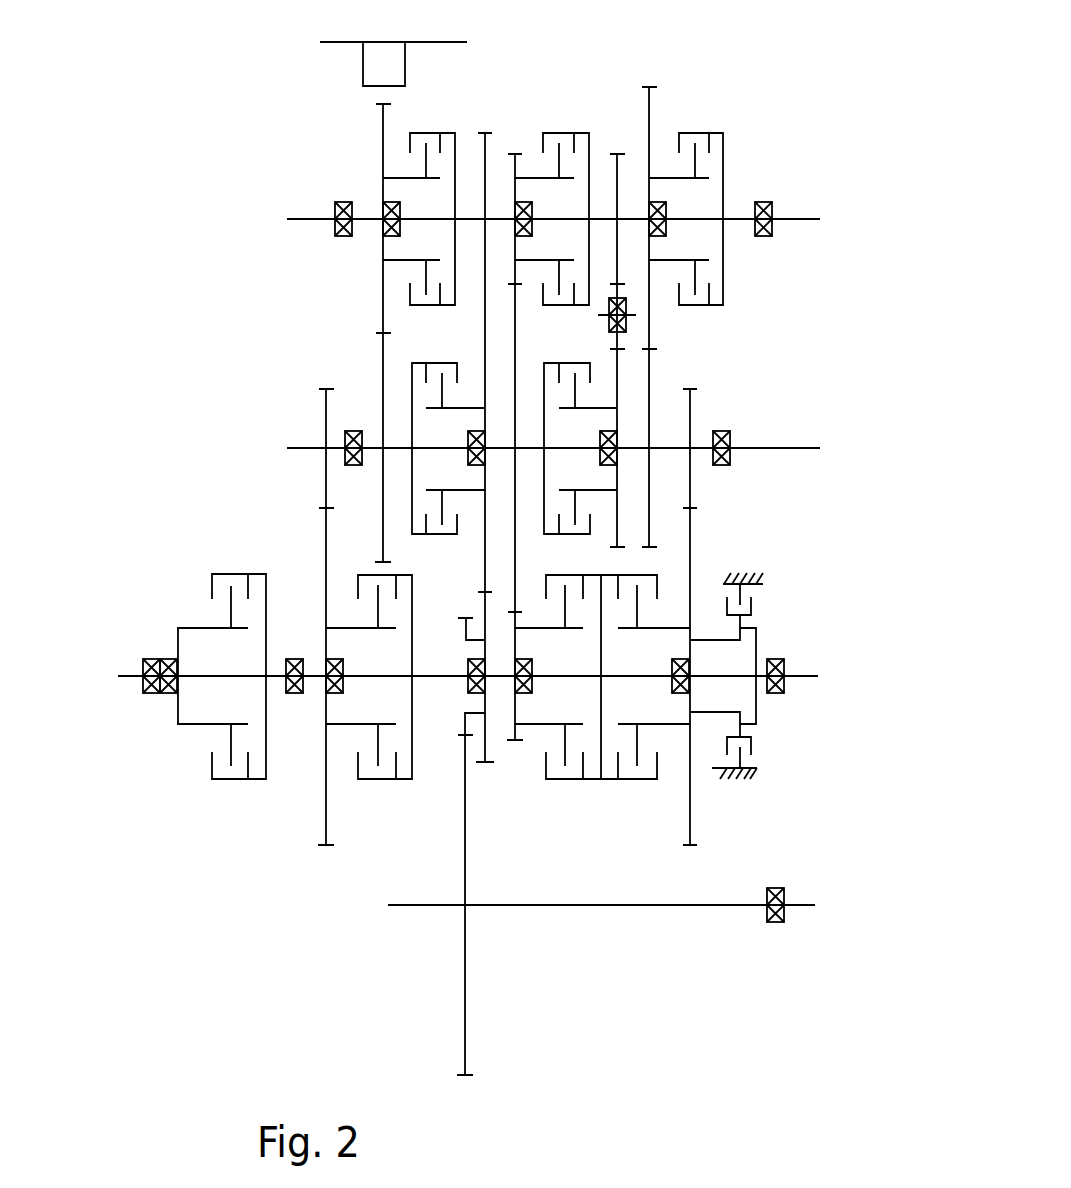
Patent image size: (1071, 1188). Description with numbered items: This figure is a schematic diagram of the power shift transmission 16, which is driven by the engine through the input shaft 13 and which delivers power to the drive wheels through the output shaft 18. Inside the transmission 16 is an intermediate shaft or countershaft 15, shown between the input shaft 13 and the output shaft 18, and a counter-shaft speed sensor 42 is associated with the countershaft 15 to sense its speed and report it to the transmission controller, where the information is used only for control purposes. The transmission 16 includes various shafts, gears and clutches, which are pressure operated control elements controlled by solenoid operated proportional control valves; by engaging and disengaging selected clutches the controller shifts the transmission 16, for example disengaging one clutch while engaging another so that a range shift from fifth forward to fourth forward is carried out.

The counter-shaft speed sensor 42 is at (363, 62).
The input shaft 13 is at (306, 221).
The countershaft 15 is at (302, 447).
The output shaft 18 is at (800, 673).
The power shift transmission 16 is at (157, 962).